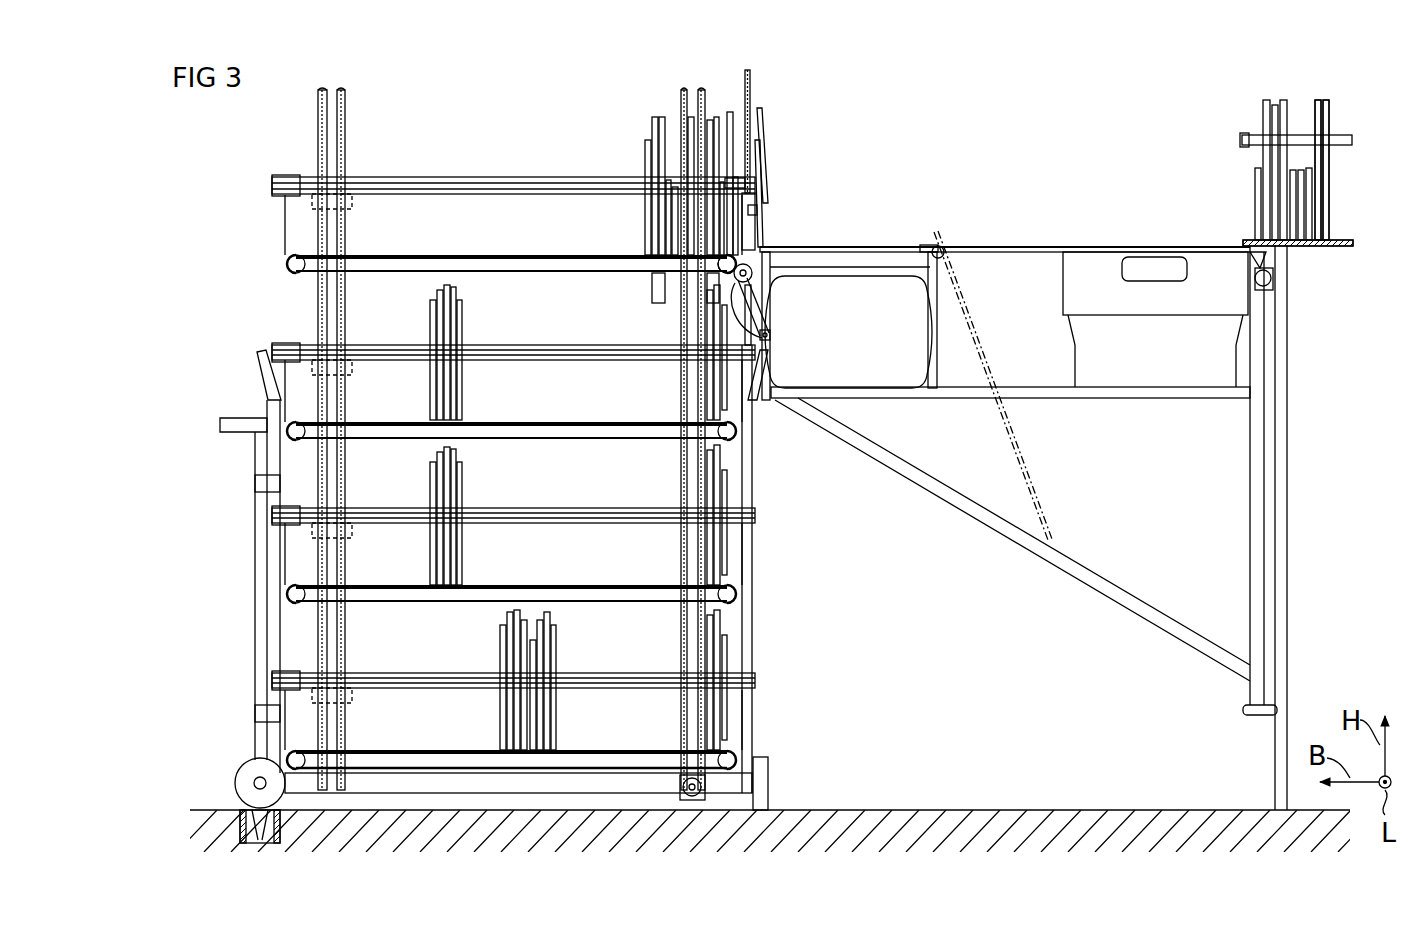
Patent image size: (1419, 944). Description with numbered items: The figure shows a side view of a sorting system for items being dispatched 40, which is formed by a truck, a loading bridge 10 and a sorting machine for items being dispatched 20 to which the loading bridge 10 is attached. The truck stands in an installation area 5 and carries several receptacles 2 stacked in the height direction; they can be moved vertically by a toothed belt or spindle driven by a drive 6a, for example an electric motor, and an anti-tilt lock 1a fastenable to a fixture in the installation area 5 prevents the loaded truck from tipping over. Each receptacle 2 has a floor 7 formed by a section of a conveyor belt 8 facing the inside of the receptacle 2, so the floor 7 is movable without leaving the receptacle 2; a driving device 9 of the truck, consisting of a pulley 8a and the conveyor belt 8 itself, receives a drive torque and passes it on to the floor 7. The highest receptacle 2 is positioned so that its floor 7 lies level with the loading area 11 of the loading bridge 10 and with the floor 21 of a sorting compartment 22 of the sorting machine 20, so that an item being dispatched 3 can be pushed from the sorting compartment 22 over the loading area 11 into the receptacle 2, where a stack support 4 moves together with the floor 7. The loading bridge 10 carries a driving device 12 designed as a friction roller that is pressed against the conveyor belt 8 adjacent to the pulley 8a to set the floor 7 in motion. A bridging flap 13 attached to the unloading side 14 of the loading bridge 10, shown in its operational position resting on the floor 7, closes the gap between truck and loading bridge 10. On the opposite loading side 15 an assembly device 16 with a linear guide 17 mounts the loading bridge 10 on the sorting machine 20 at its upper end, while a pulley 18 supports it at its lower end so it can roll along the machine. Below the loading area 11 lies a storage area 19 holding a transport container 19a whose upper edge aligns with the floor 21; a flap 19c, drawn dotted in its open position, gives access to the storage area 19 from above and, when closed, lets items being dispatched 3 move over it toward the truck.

The sorting system for items being dispatched 40 is at (263, 150).
The receptacle 2 is at (290, 230).
The floor 7 is at (392, 252).
The conveyor belt 8 is at (300, 280).
The pulley 8a is at (720, 283).
The driving device 9 is at (722, 308).
The driving device 12 is at (770, 320).
The item being dispatched 3 is at (653, 105).
The stack support 4 is at (645, 160).
The installation area 5 is at (350, 648).
The unloading side 14 is at (782, 138).
The bridging flap 13 is at (738, 245).
The loading bridge 10 is at (1096, 153).
The loading area 11 is at (987, 244).
The flap 19c is at (1047, 248).
The storage area 19 is at (1039, 383).
The transport container 19a is at (1142, 368).
The pulley 18 is at (1250, 718).
The sorting machine for items being dispatched 20 is at (1260, 89).
The loading side 15 is at (1234, 220).
The sorting compartment 22 is at (1337, 226).
The floor 21 is at (1335, 245).
The assembly device 16 is at (1272, 280).
The linear guide 17 is at (1264, 279).
The anti-tilt lock 1a is at (236, 803).
The drive 6a is at (702, 797).